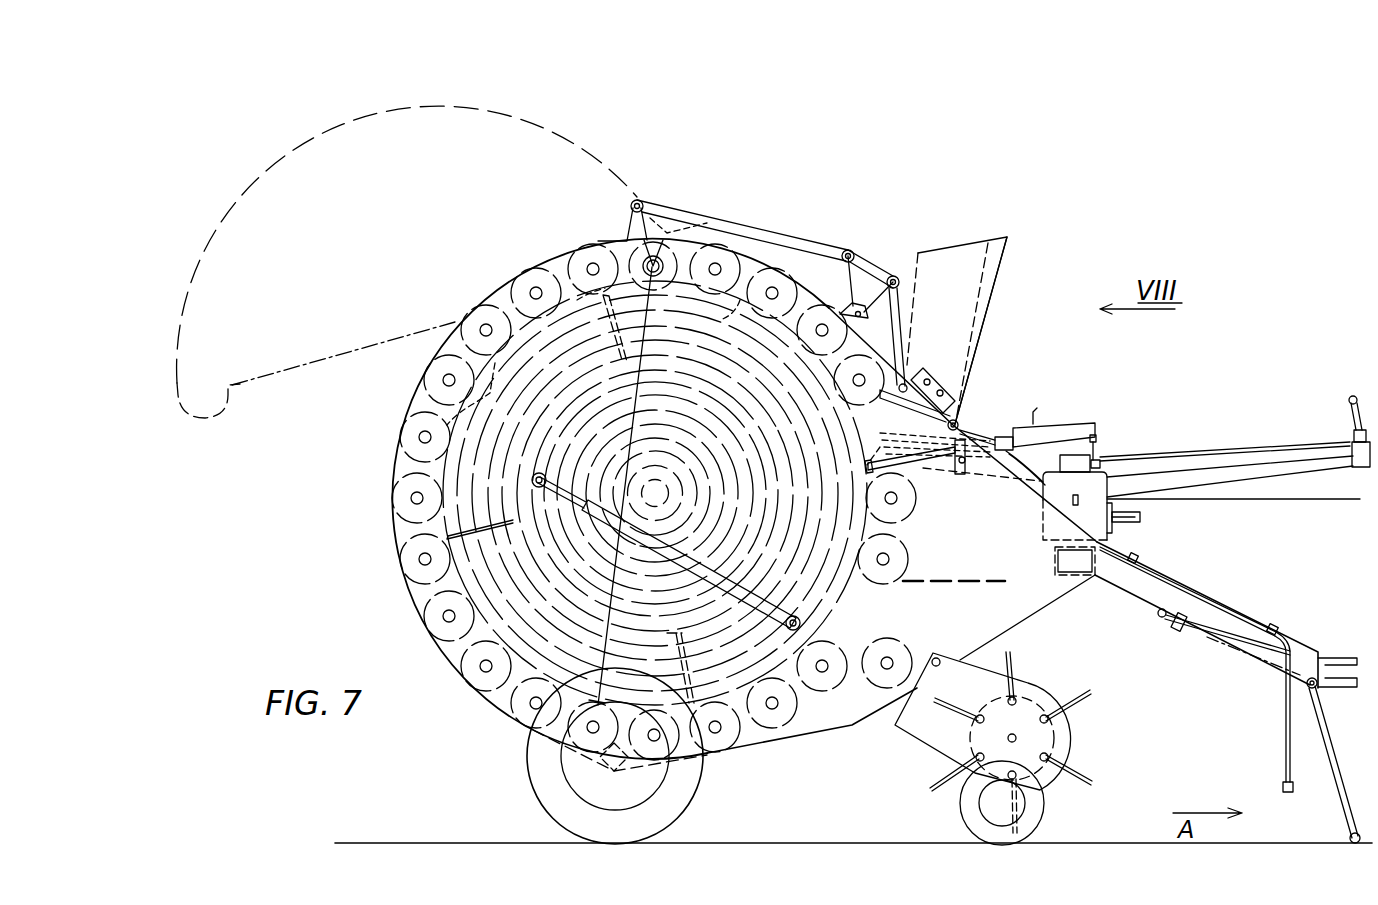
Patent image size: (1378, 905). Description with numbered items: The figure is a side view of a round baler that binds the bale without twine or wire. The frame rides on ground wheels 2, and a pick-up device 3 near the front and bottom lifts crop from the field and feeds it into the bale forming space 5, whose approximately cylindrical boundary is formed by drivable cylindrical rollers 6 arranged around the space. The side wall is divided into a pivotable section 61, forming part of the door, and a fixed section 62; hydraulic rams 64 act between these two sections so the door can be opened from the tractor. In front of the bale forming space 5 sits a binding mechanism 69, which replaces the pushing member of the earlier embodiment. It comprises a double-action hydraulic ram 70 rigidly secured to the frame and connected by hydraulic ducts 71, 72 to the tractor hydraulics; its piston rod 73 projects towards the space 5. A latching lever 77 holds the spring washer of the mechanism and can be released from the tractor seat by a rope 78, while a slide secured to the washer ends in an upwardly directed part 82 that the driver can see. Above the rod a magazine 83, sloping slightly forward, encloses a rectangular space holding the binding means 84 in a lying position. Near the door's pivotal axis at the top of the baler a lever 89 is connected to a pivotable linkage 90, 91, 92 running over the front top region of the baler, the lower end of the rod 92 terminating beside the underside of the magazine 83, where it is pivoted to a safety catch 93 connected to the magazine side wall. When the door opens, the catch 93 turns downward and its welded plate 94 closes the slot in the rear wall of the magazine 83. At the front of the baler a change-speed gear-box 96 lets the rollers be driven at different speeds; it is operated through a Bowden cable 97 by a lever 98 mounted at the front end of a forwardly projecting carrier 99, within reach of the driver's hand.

The ground wheels 2 is at (545, 803).
The pick-up device 3 is at (1078, 824).
The bale forming space 5 is at (660, 506).
The cylindrical rollers 6 is at (753, 308).
The pivotable section of the side wall 61 is at (540, 443).
The fixed section of the side wall 62 is at (768, 460).
The hydraulic rams 64 is at (690, 550).
The binding mechanism 69 is at (989, 349).
The double-action hydraulic ram 70 is at (1090, 422).
The hydraulic duct 71 is at (1024, 472).
The hydraulic duct 72 is at (1100, 458).
The piston rod 73 is at (924, 470).
The latching lever 77 is at (965, 476).
The rope 78 is at (1228, 500).
The upwardly directed part 82 is at (1040, 408).
The magazine 83 is at (1007, 237).
The binding means 84 is at (614, 340).
The lever 89 is at (632, 208).
The pivotable linkage member 90 is at (750, 228).
The pivotable linkage member 91 is at (867, 262).
The rod 92 is at (898, 307).
The safety catch 93 is at (960, 408).
The plate 94 is at (853, 420).
The change-speed gear-box 96 is at (1100, 545).
The Bowden cable 97 is at (1200, 450).
The lever 98 is at (1348, 405).
The carrier 99 is at (1290, 465).